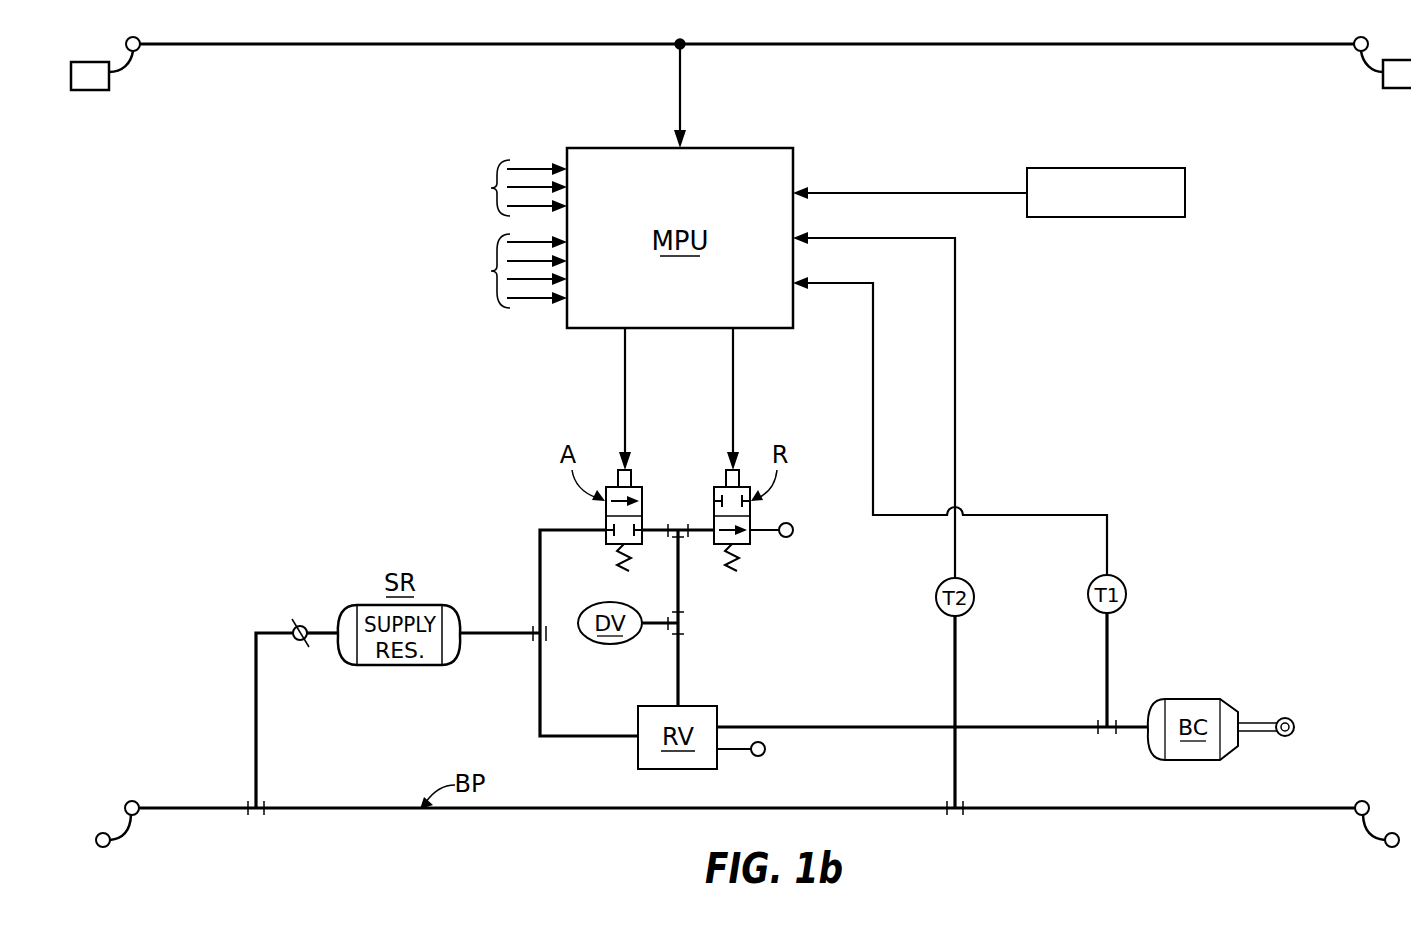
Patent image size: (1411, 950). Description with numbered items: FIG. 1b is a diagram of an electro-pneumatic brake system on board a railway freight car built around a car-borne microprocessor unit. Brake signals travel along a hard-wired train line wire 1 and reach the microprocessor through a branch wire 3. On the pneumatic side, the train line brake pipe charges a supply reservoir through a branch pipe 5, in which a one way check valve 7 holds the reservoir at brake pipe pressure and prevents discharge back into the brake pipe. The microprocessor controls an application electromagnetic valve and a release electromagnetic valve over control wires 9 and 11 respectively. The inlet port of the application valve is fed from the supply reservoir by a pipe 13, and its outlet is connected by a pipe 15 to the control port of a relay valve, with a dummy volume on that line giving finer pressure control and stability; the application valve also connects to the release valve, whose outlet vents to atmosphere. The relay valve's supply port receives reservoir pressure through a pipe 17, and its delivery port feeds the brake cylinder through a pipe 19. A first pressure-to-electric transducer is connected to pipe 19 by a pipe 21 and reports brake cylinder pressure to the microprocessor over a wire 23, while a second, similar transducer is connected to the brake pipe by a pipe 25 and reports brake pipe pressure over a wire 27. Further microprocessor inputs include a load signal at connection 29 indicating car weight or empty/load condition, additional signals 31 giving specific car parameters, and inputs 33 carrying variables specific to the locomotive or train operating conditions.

The train line wire 1 is at (542, 44).
The branch wire 3 is at (680, 88).
The branch pipe 5 is at (258, 706).
The one way check valve 7 is at (299, 625).
The control wire 9 is at (625, 387).
The control wire 11 is at (735, 390).
The pipe 13 is at (538, 561).
The pipe 15 is at (680, 665).
The pipe 17 is at (540, 685).
The pipe 19 is at (1022, 725).
The pipe 21 is at (1110, 660).
The wire 23 is at (873, 387).
The pipe 25 is at (955, 765).
The wire 27 is at (957, 327).
The load signal connection 29 is at (966, 190).
The additional signals 31 is at (485, 170).
The inputs 33 is at (485, 305).